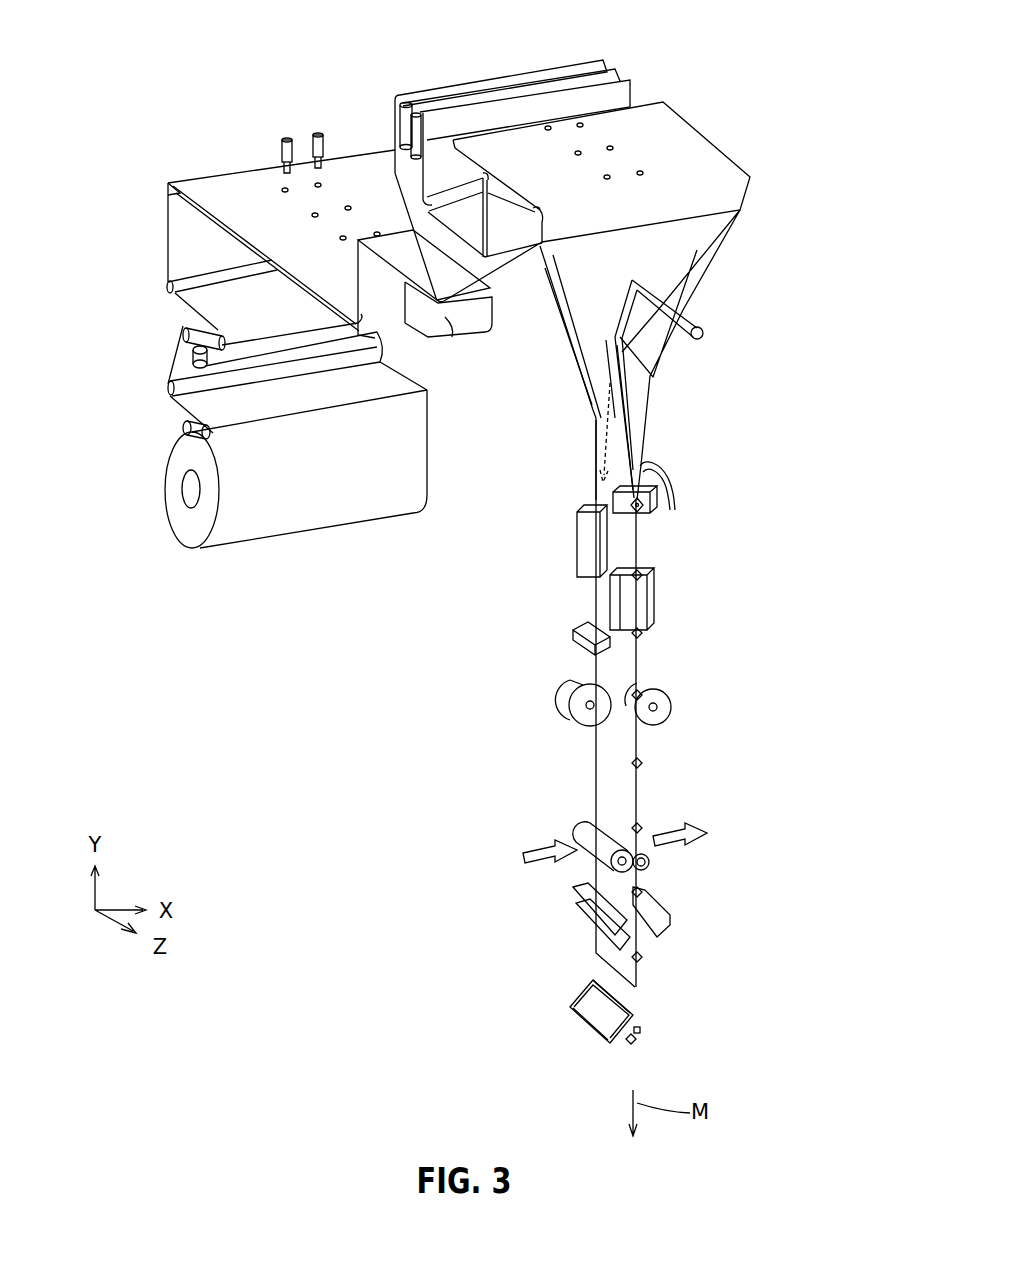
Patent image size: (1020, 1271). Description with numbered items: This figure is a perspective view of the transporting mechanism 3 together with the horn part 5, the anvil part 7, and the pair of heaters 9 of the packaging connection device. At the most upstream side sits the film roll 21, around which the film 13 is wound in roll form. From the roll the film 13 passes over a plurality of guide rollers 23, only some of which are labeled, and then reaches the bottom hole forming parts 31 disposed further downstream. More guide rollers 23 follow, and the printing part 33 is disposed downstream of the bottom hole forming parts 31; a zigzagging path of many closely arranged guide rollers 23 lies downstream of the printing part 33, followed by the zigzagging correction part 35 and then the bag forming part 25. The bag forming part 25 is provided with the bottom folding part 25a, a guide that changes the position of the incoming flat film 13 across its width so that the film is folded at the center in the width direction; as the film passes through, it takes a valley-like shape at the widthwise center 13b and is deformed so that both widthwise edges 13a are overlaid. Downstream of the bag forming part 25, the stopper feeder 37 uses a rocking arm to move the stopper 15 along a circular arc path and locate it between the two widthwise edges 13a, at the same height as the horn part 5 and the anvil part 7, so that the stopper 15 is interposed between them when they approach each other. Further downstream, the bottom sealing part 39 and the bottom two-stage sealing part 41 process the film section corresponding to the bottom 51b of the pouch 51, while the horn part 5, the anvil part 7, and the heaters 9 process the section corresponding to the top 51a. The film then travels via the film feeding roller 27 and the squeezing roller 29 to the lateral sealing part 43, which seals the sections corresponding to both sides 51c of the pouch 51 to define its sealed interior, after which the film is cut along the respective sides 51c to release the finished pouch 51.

The transporting mechanism 3 is at (667, 723).
The horn part 5 is at (650, 510).
The anvil part 7 is at (615, 490).
The heaters 9 is at (623, 600).
The film 13 is at (700, 125).
The widthwise edges 13a is at (623, 415).
The widthwise center 13b is at (593, 445).
The stopper 15 is at (640, 512).
The film roll 21 is at (193, 530).
The guide rollers 23 is at (392, 100).
The bag forming part 25 is at (693, 242).
The bottom folding part 25a is at (588, 383).
The film feeding roller 27 is at (593, 733).
The squeezing roller 29 is at (585, 825).
The bottom hole forming parts 31 is at (278, 141).
The printing part 33 is at (255, 245).
The zigzagging correction part 35 is at (467, 218).
The stopper feeder 37 is at (670, 480).
The bottom sealing part 39 is at (573, 527).
The bottom 2-stage sealing part 41 is at (582, 650).
The lateral sealing part 43 is at (580, 917).
The pouch 51 is at (580, 1020).
The top 51a is at (633, 1023).
The bottom 51b is at (582, 993).
The sides 51c is at (620, 1005).